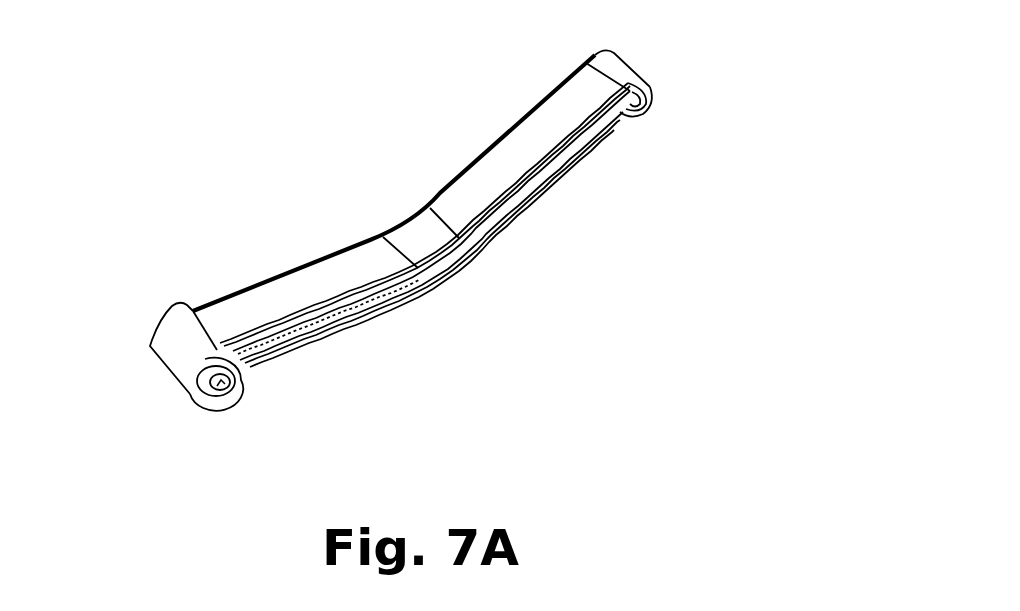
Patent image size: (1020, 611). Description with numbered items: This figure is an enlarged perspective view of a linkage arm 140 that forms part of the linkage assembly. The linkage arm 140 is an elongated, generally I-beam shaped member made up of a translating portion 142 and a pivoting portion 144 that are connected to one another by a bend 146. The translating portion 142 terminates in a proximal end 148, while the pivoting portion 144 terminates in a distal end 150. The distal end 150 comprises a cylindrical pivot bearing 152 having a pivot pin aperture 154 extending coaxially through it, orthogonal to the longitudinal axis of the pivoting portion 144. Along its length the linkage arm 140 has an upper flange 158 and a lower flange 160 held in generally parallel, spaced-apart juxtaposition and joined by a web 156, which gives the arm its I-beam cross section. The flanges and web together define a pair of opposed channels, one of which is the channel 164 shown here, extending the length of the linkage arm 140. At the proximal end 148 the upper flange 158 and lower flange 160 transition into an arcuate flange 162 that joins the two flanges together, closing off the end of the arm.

The linkage arm 140 is at (286, 206).
The translating portion 142 is at (533, 178).
The pivoting portion 144 is at (257, 343).
The bend 146 is at (440, 268).
The proximal end 148 is at (628, 63).
The distal end 150 is at (202, 386).
The cylindrical pivot bearing 152 is at (166, 342).
The pivot pin aperture 154 is at (219, 385).
The web 156 is at (520, 204).
The upper flange 158 is at (597, 158).
The lower flange 160 is at (480, 190).
The arcuate flange 162 is at (640, 110).
The channel 164 is at (565, 168).